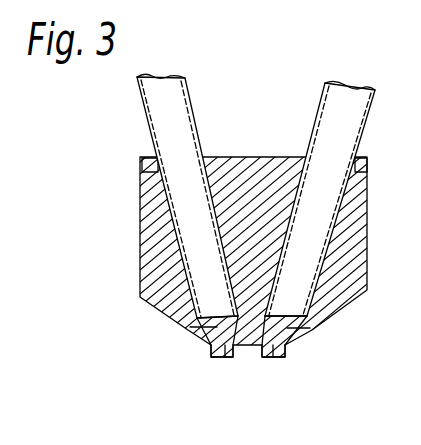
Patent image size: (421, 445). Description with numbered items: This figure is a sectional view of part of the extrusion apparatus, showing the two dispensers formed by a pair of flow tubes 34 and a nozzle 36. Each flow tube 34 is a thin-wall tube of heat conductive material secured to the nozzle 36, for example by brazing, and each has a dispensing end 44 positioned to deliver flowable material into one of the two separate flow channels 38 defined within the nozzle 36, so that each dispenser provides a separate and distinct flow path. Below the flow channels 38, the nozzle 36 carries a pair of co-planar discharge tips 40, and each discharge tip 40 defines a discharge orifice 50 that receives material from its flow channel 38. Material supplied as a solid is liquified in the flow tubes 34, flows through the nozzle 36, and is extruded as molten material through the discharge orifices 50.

The flow tube 34 is at (193, 84).
The nozzle 36 is at (143, 217).
The flow channel 38 is at (186, 328).
The discharge tip 40 is at (212, 361).
The dispensing end 44 is at (218, 313).
The discharge orifice 50 is at (273, 360).